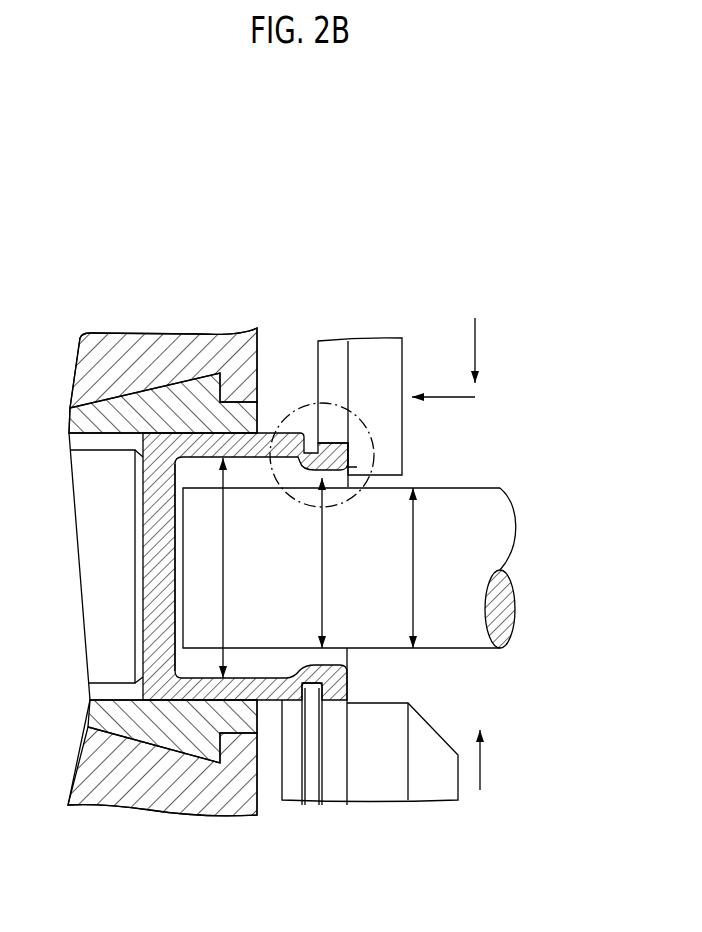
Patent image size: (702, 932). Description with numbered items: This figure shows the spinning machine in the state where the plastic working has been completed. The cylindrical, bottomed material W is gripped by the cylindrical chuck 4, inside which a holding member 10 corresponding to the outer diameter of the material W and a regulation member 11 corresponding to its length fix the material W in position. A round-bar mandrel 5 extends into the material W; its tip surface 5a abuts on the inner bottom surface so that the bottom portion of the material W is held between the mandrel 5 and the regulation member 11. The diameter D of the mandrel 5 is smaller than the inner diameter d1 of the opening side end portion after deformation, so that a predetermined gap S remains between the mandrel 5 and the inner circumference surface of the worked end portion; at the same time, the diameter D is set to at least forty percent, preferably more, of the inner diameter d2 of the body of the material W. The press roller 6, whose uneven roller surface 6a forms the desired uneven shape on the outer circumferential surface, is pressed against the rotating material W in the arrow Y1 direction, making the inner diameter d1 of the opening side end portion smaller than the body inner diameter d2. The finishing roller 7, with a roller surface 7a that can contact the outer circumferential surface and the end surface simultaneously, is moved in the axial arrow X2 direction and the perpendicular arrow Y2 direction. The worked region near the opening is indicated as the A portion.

The chuck 4 is at (268, 345).
The holding member 10 is at (199, 390).
The regulation member 11 is at (122, 586).
The material W is at (143, 482).
The tip surface 5a is at (172, 550).
The mandrel 5 is at (484, 487).
The finishing roller 7 is at (366, 343).
The roller surface 7a is at (400, 458).
The press roller 6 is at (440, 733).
The uneven roller surface 6a is at (374, 703).
The A portion A is at (289, 413).
The gap S is at (297, 480).
The inner diameter of the opening side end portion d1 is at (322, 568).
The inner diameter of the body d2 is at (223, 568).
The diameter of the mandrel D is at (413, 568).
The arrow X2 direction X2 is at (443, 397).
The arrow Y2 direction Y2 is at (475, 350).
The arrow Y1 direction Y1 is at (480, 762).